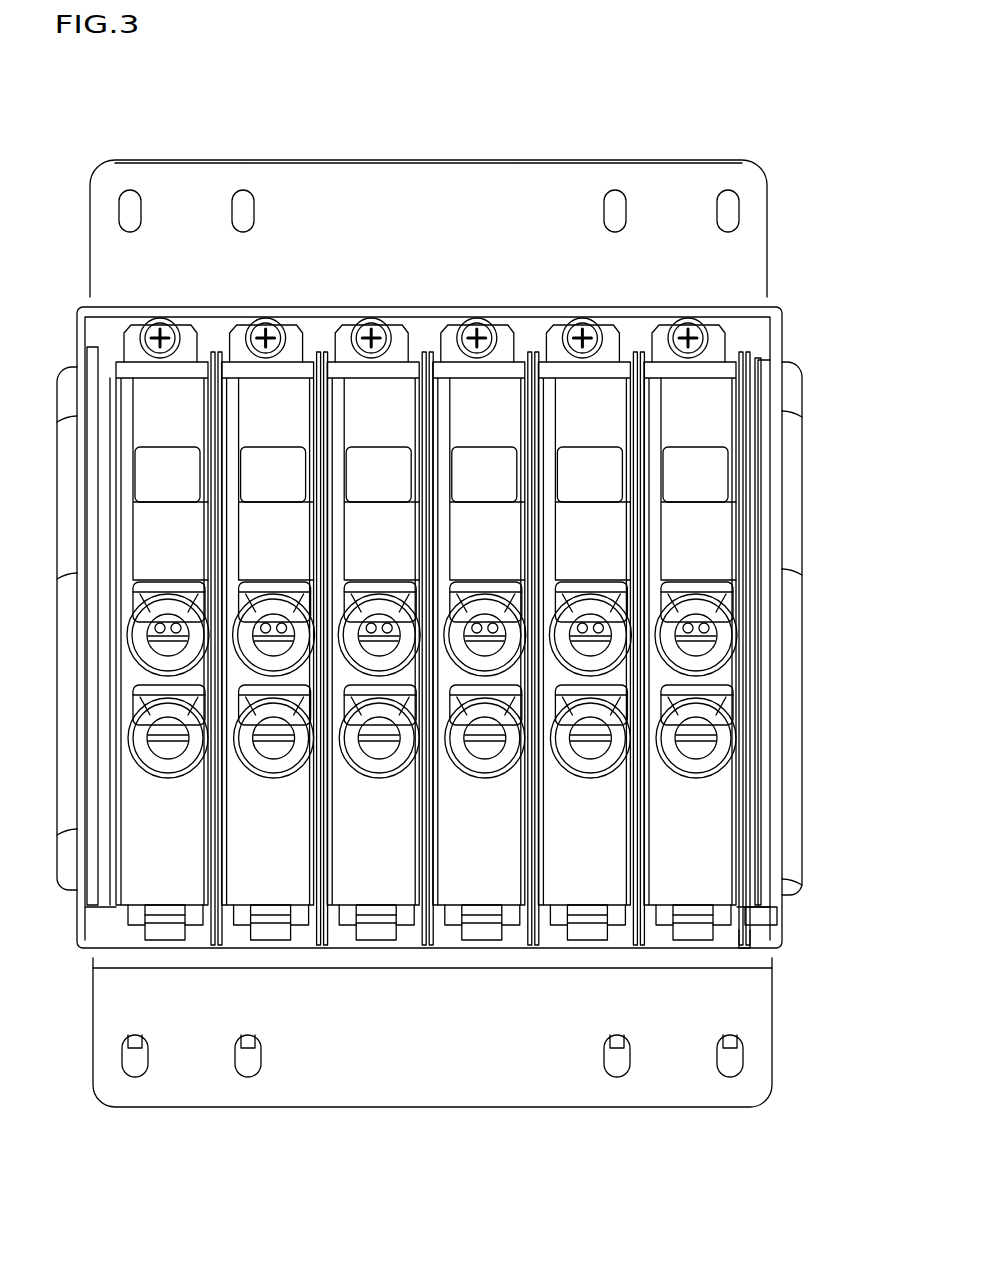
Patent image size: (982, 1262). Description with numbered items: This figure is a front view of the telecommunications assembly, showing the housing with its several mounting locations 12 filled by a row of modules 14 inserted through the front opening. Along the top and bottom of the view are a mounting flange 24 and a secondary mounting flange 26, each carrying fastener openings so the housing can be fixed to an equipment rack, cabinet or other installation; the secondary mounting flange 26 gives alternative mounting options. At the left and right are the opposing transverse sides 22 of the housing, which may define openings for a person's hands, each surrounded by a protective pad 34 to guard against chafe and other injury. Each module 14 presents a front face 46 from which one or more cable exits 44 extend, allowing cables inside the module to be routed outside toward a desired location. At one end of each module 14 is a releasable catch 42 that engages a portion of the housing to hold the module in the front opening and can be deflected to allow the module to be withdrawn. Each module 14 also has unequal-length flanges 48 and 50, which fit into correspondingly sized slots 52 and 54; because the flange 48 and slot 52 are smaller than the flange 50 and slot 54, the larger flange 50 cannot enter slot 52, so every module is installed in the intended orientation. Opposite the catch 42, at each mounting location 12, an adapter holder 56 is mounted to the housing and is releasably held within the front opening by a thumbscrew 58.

The mounting location 12 is at (445, 327).
The module 14 is at (183, 543).
The transverse side 22 is at (77, 347).
The mounting flange 24 is at (381, 226).
The secondary mounting flange 26 is at (417, 1039).
The protective pad 34 is at (58, 498).
The releasable catch 42 is at (165, 942).
The cable exit 44 is at (142, 745).
The front face 46 is at (183, 843).
The flange 48 is at (742, 352).
The flange 50 is at (744, 948).
The slot 52 is at (752, 362).
The slot 54 is at (748, 932).
The adapter holder 56 is at (133, 330).
The thumbscrew 58 is at (160, 318).